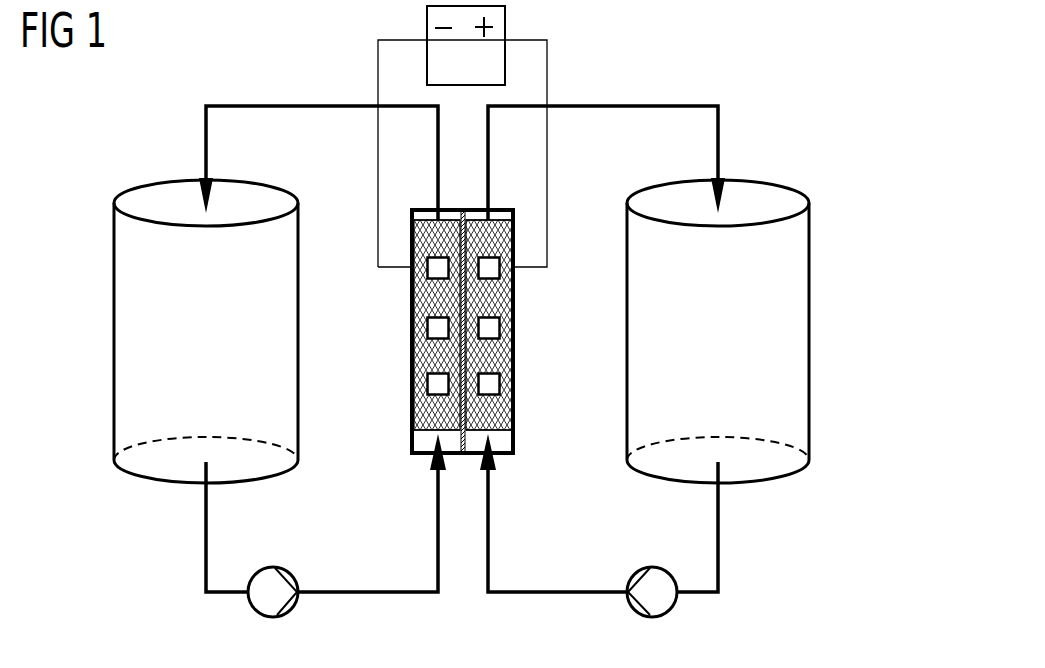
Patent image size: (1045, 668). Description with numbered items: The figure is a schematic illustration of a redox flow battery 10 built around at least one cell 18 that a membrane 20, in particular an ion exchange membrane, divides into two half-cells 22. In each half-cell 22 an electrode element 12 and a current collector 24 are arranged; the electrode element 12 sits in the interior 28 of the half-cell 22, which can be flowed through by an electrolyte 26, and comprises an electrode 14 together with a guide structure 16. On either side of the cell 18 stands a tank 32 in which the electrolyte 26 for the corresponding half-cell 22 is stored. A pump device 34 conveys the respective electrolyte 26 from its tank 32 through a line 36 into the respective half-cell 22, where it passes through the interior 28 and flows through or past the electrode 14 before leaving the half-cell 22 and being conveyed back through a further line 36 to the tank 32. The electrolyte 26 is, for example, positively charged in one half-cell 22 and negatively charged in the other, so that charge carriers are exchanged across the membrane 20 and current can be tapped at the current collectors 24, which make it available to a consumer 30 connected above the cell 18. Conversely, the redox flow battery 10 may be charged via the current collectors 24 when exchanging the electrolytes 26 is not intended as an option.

The redox flow battery 10 is at (728, 60).
The electrode element 12 is at (424, 206).
The electrode 14 is at (425, 355).
The guide structure 16 is at (427, 317).
The cell 18 is at (408, 478).
The membrane 20 is at (463, 453).
The half-cells 22 is at (425, 447).
The current collector 24 is at (413, 395).
The electrolyte 26 is at (140, 287).
The interior 28 is at (428, 238).
The consumer 30 is at (481, 76).
The tanks 32 is at (128, 320).
The pump device 34 is at (276, 566).
The line 36 is at (206, 140).